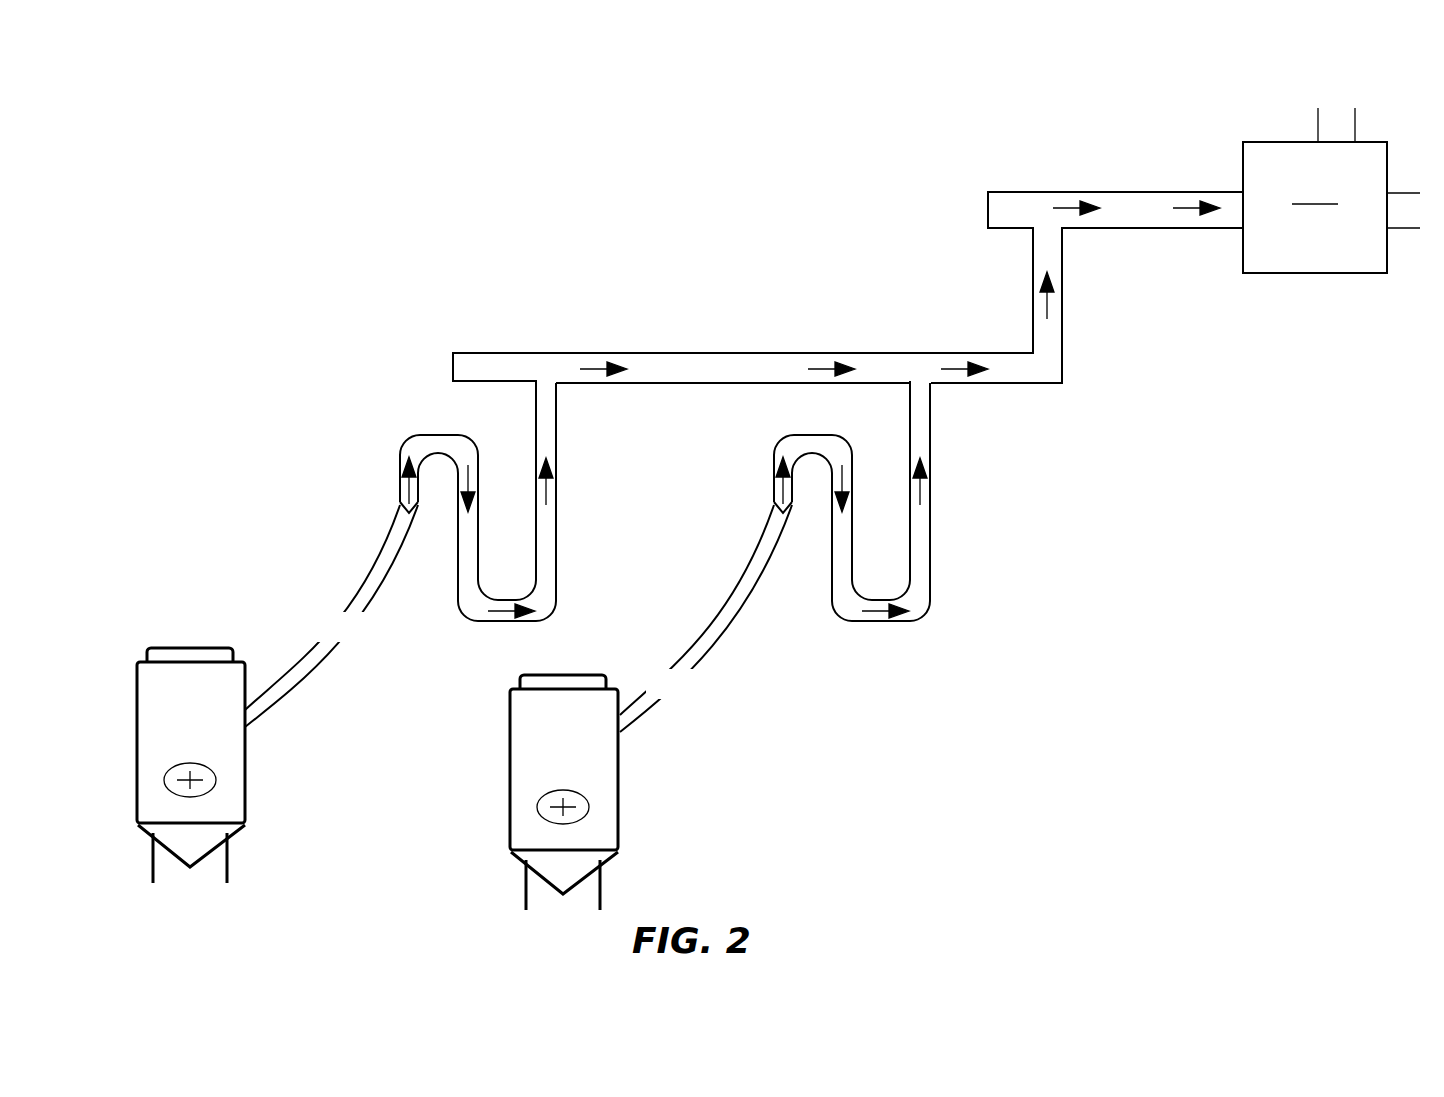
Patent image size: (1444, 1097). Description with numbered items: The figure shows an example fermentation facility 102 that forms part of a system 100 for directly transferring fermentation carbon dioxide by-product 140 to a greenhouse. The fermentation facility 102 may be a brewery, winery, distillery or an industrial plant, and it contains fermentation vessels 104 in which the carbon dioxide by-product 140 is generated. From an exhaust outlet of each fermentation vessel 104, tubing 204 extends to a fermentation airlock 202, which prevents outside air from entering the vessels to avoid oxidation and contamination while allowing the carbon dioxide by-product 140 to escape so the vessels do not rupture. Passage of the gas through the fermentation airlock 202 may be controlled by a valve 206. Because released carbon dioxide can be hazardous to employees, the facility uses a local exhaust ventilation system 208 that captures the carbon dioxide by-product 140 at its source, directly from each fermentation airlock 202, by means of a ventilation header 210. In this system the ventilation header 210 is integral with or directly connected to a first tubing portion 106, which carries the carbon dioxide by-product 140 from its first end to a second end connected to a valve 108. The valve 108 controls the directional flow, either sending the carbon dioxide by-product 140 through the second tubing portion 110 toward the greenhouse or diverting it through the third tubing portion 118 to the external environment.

The system 100 is at (183, 88).
The fermentation facility 102 is at (122, 132).
The fermentation vessel 104 is at (208, 763).
The first tubing portion 106 is at (1210, 230).
The valve 108 is at (1315, 207).
The second tubing portion 110 is at (1402, 232).
The third tubing portion 118 is at (1318, 128).
The carbon dioxide by-product 140 is at (320, 603).
The fermentation airlock 202 is at (732, 512).
The tubing 204 is at (373, 573).
The valve 206 is at (400, 502).
The exhaust ventilation system 208 is at (423, 171).
The ventilation header 210 is at (703, 370).